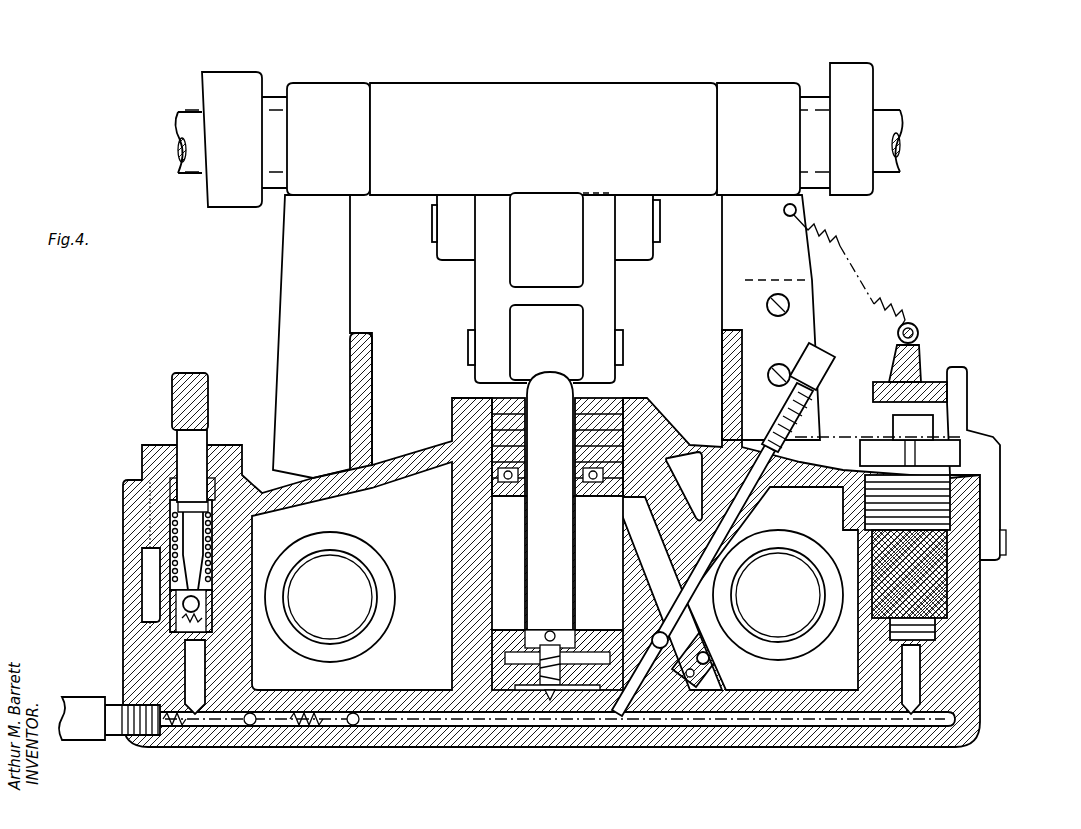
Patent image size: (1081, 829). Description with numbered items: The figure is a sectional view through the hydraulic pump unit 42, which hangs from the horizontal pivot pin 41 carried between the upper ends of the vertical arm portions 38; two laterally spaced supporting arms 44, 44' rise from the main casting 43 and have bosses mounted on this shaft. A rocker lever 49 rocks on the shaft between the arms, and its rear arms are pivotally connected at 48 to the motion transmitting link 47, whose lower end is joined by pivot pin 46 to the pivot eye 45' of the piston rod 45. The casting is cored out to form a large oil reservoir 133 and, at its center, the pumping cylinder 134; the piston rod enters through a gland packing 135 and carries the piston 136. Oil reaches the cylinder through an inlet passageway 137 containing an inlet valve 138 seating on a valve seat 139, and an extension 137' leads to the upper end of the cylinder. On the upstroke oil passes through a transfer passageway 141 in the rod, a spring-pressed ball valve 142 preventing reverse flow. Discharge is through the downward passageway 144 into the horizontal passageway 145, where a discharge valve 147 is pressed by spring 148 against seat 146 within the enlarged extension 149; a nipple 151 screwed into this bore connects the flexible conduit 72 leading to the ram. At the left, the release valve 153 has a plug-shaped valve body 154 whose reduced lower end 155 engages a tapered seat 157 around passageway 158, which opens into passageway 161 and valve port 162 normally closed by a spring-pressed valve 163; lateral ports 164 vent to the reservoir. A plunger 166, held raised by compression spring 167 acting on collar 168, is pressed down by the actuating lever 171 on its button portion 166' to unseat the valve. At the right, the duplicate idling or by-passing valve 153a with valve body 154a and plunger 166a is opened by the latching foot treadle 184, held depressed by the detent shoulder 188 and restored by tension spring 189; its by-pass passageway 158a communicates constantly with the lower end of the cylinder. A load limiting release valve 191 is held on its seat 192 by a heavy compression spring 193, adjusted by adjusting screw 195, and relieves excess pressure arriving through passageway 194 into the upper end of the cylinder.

The vertical arm portion 38 is at (215, 92).
The horizontal pivot pin 41 is at (262, 104).
The rocker lever 49 is at (515, 92).
The supporting arm 44 is at (530, 280).
The pivot connection 48 is at (432, 234).
The motion transmitting link 47 is at (475, 283).
The pivot eye 45' is at (506, 286).
The piston rod 45 is at (502, 501).
The pivot pin 46 is at (625, 343).
The supporting arm 44' is at (815, 223).
The tension spring 189 is at (892, 308).
The detent shoulder 188 is at (862, 383).
The latching foot treadle 184 is at (940, 380).
The adjusting screw 195 is at (808, 362).
The compression spring 193 is at (818, 445).
The plunger 166a is at (920, 425).
The idling or by-passing valve 153a is at (983, 452).
The valve body 154a is at (1003, 520).
The gland packing 135 is at (655, 432).
The oil reservoir 133 is at (375, 470).
The pumping cylinder 134 is at (455, 548).
The passageway extension 137' is at (676, 486).
The inlet passageway 137 is at (698, 593).
The inlet valve 138 is at (720, 645).
The valve seat 139 is at (712, 655).
The by-pass passageway 158a is at (915, 680).
The transfer passageway 141 is at (522, 608).
The spring-pressed ball valve 142 is at (545, 630).
The load limiting release valve 191 is at (592, 606).
The seat 192 is at (652, 635).
The passageway 194 is at (625, 715).
The discharge passageway 144 is at (550, 700).
The horizontal passageway 145 is at (452, 728).
The valve seat 146 is at (400, 728).
The discharge valve 147 is at (350, 726).
The spring 148 is at (300, 726).
The enlarged bore extension 149 is at (245, 726).
The nipple 151 is at (118, 737).
The flexible conduit 72 is at (75, 712).
The passageway 158 is at (190, 677).
The tapered seat 157 is at (175, 630).
The reduced lower end 155 is at (158, 600).
The passageway 161 is at (212, 645).
The valve port 162 is at (218, 575).
The spring-pressed valve 163 is at (200, 603).
The lateral ports 164 is at (212, 575).
The compression spring 167 is at (212, 560).
The plunger 166 is at (236, 545).
The collar 168 is at (222, 468).
The button portion 166' is at (217, 454).
The release valve 153 is at (133, 434).
The valve body 154 is at (135, 483).
The actuating lever 171 is at (175, 380).
The main casting 43 is at (313, 476).
The pump unit 42 is at (258, 313).
The piston 136 is at (498, 640).